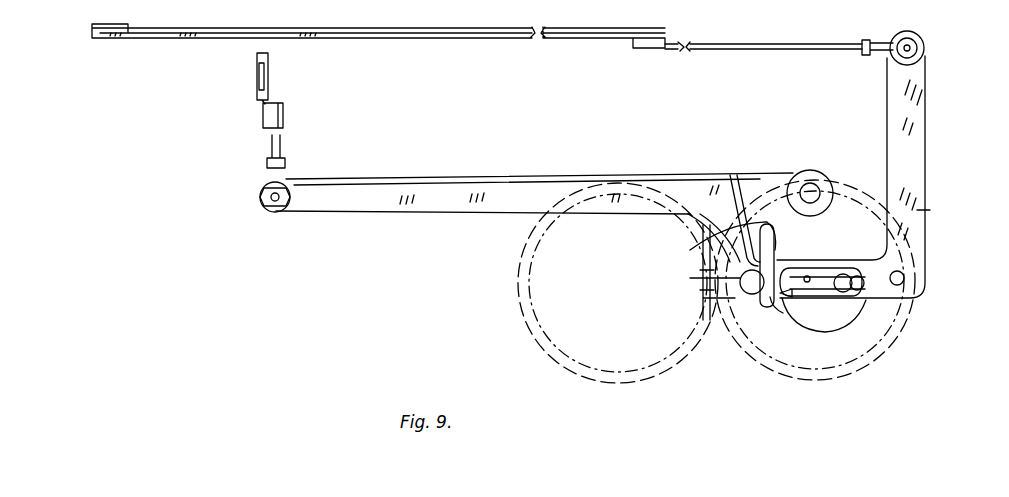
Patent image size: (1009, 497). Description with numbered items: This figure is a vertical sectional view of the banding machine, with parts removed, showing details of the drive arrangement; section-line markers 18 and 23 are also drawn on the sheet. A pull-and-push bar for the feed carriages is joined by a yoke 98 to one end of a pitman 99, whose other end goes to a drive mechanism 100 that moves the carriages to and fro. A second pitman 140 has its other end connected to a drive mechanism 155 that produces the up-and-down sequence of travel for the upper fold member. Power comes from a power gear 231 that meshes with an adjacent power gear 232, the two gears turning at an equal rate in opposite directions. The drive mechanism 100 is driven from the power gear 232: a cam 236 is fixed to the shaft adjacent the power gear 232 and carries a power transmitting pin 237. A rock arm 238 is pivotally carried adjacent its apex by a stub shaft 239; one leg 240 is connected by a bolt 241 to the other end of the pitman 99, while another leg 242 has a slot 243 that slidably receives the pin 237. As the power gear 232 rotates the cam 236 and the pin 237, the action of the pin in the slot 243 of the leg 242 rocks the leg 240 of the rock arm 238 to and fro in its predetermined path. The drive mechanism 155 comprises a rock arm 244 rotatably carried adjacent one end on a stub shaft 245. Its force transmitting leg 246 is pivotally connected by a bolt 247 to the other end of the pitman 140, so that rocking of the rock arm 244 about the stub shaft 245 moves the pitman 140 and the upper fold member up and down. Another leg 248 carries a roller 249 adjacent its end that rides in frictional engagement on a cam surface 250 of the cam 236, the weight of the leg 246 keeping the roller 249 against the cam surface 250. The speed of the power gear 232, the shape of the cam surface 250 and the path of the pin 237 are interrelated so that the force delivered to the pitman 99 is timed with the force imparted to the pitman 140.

The section line 18 is at (5, 6).
The section line 23 is at (337, 172).
The yoke 98 is at (533, 28).
The pitman 99 is at (803, 43).
The drive mechanism 100 is at (936, 126).
The pitman 140 is at (284, 115).
The drive mechanism 155 is at (418, 175).
The power gear 231 is at (588, 368).
The power gear 232 is at (868, 330).
The cam 236 is at (816, 310).
The power transmitting pin 237 is at (843, 274).
The rock arm 238 is at (939, 199).
The stub shaft 239 is at (905, 278).
The leg 240 is at (905, 86).
The bolt 241 is at (935, 22).
The leg 242 is at (803, 252).
The slot 243 is at (788, 330).
The rock arm 244 is at (700, 172).
The stub shaft 245 is at (812, 171).
The force transmitting leg 246 is at (356, 178).
The bolt 247 is at (292, 176).
The leg 248 is at (690, 250).
The roller 249 is at (702, 285).
The cam surface 250 is at (788, 316).